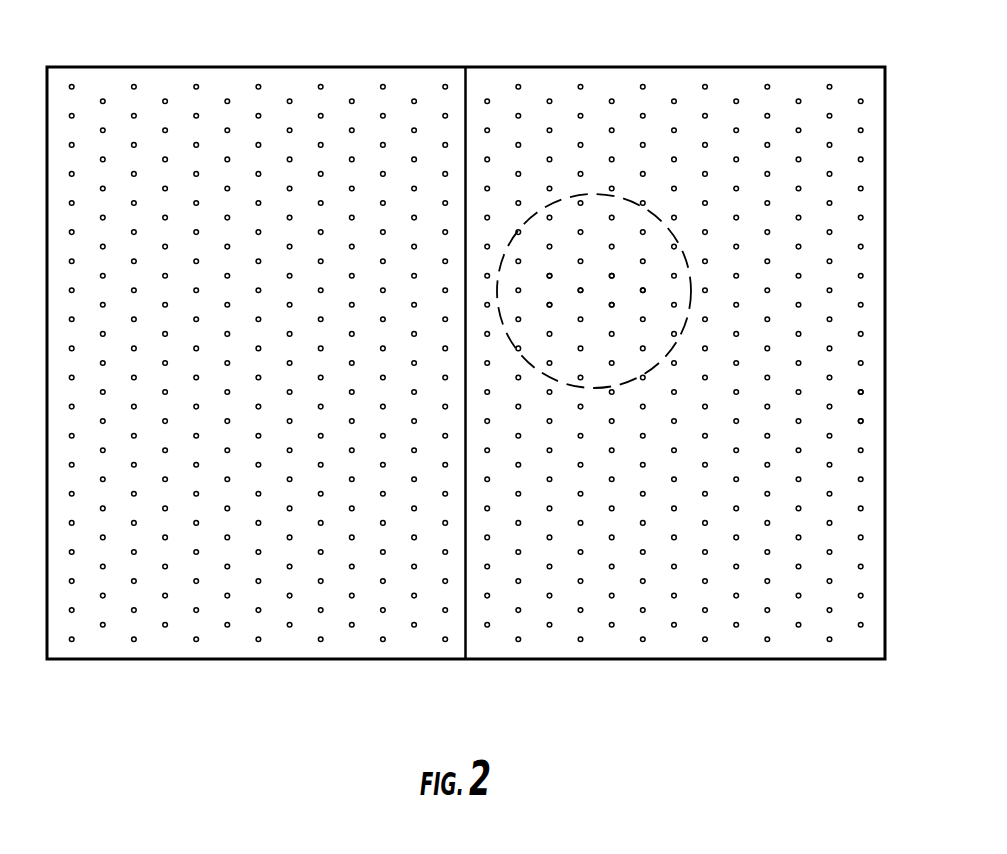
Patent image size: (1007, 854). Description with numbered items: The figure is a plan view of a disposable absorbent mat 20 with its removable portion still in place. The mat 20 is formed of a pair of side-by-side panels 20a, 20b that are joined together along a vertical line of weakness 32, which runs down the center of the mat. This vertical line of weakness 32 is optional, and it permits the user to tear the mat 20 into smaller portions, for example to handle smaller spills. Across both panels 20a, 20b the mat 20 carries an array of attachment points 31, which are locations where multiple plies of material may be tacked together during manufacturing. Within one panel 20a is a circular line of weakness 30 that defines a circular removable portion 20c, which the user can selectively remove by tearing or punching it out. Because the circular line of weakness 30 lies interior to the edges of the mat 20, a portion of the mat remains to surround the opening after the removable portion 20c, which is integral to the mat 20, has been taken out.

The mat 20 is at (893, 289).
The panel 20a is at (492, 641).
The panel 20b is at (115, 641).
The removable portion 20c is at (628, 210).
The circular line of weakness 30 is at (683, 250).
The attachment points 31 is at (863, 392).
The vertical line of weakness 32 is at (465, 587).